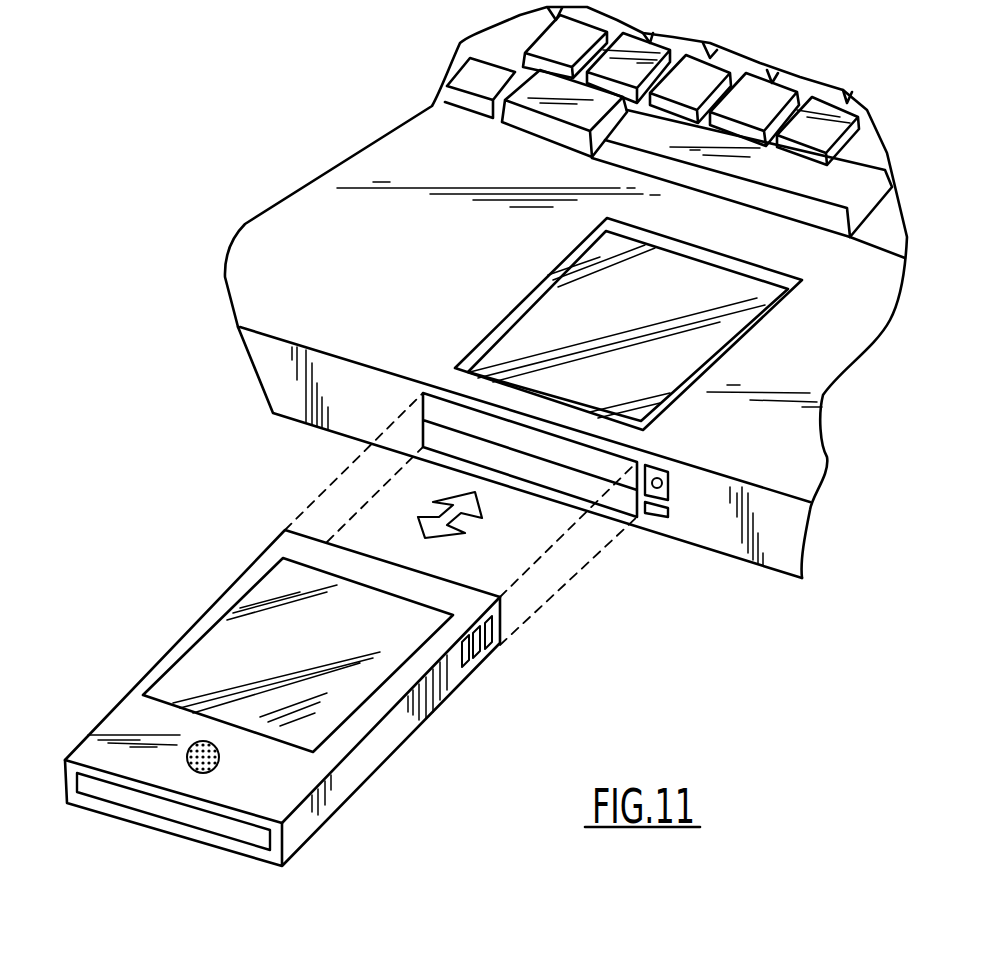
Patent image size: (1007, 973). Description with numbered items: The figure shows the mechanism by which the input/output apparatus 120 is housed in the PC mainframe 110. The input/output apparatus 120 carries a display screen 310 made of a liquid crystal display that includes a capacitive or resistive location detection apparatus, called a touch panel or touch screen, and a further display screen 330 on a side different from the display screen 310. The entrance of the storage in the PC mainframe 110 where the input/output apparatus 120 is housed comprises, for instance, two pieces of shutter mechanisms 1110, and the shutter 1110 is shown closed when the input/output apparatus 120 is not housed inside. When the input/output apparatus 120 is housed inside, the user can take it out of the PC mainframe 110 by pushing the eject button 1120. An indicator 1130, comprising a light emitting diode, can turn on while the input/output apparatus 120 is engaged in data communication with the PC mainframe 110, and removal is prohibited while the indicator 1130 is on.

The PC mainframe 110 is at (368, 122).
The shutter mechanism 1110 is at (488, 458).
The eject button 1120 is at (672, 483).
The indicator 1130 is at (657, 513).
The input/output apparatus 120 is at (405, 733).
The display screen 310 is at (232, 658).
The display screen 330 is at (124, 795).